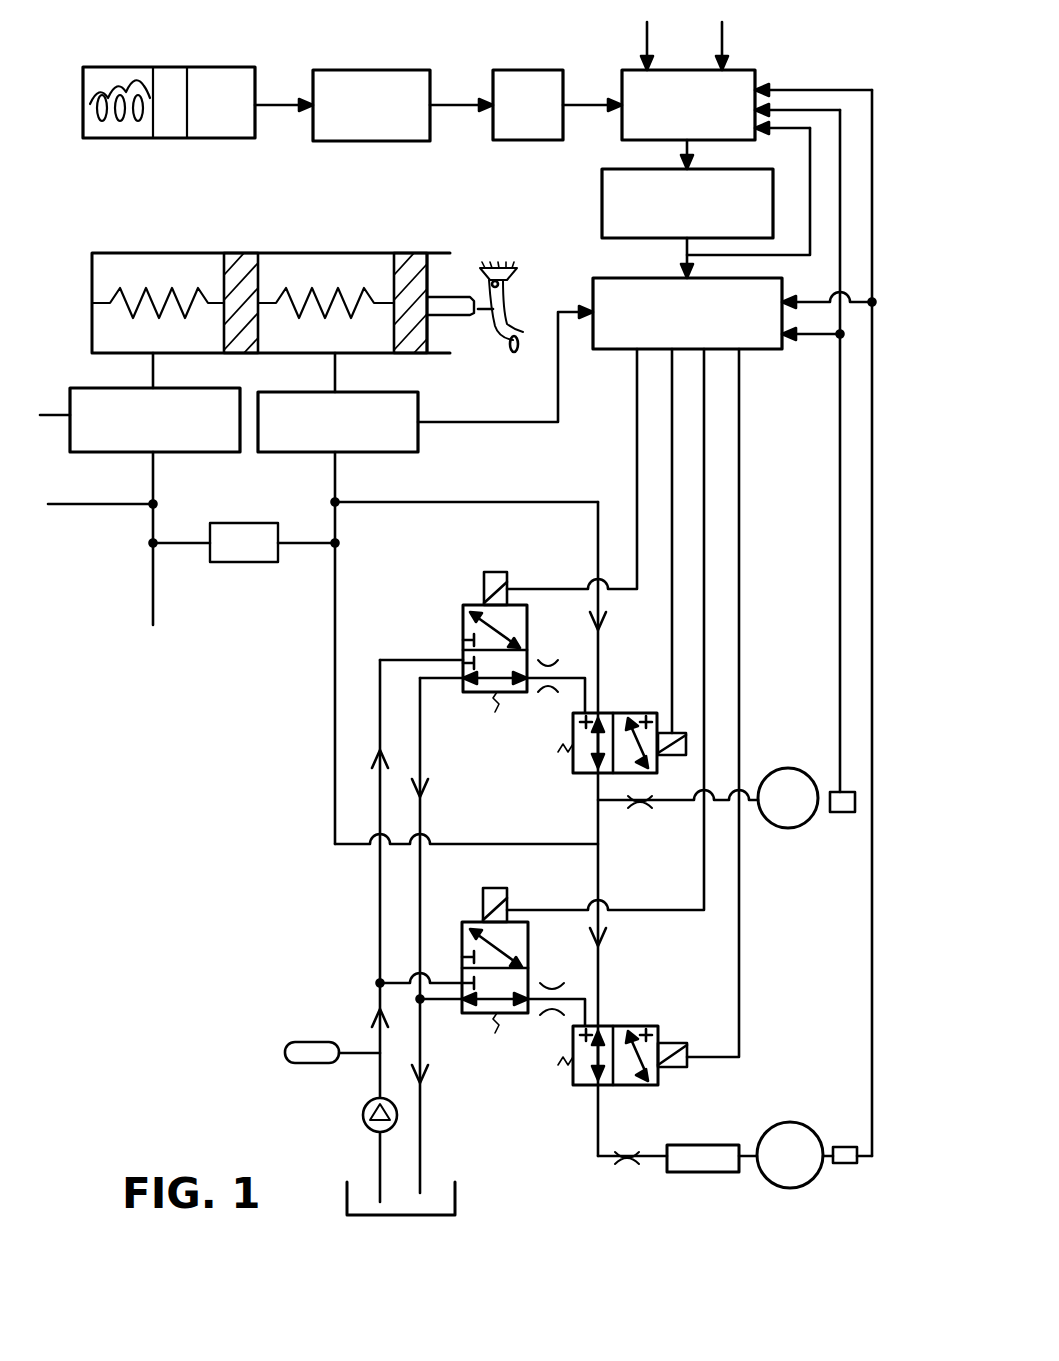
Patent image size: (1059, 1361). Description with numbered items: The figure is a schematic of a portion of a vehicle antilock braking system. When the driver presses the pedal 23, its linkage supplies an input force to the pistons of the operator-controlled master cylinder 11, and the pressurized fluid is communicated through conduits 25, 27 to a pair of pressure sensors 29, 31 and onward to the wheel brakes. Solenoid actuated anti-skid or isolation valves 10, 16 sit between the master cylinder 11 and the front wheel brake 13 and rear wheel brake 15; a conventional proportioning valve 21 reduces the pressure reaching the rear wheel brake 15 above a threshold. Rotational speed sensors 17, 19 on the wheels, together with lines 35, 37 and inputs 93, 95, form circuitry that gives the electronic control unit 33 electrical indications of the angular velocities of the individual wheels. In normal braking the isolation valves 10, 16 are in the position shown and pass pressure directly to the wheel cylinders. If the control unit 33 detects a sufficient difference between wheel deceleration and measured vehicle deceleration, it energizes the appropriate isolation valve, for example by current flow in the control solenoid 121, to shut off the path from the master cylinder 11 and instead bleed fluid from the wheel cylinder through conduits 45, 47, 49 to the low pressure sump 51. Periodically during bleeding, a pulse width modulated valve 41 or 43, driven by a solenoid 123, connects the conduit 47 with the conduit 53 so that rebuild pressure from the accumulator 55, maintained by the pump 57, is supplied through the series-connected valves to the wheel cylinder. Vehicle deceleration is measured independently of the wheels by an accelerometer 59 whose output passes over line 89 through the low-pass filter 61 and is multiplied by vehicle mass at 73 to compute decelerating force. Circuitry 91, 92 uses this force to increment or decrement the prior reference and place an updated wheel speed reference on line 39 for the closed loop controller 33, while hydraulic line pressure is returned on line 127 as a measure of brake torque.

The anti-skid or isolation valve 10 is at (578, 770).
The master cylinder 11 is at (329, 253).
The front wheel brake 13 is at (782, 768).
The rear wheel brake 15 is at (790, 1122).
The anti-skid or isolation valve 16 is at (574, 1076).
The rotational speed sensor 17 is at (838, 812).
The rotational speed sensor 19 is at (845, 1163).
The proportioning valve 21 is at (705, 1145).
The brake pedal and linkage 23 is at (456, 297).
The conduit (brake line) 25 is at (153, 370).
The conduit (brake line) 27 is at (335, 372).
The pressure sensor 29 is at (76, 390).
The pressure sensor 31 is at (408, 448).
The electronic control unit 33 is at (768, 345).
The wheel speed circuitry line 35 is at (840, 573).
The wheel speed circuitry line 37 is at (872, 956).
The wheel speed reference line 39 is at (680, 256).
The pulse width modulated solenoid actuated valve 41 is at (474, 608).
The pulse width modulated solenoid actuated valve 43 is at (470, 1015).
The conduit 45 is at (613, 800).
The conduit 47 is at (546, 660).
The conduit 49 is at (420, 730).
The sump 51 is at (455, 1194).
The conduit 53 is at (380, 897).
The accumulator 55 is at (286, 1046).
The pump 57 is at (364, 1116).
The accelerometer 59 is at (165, 138).
The low-pass filter 61 is at (322, 78).
The multiplier 73 is at (509, 78).
The accelerometer signal line 89 is at (272, 105).
The wheel speed reference circuitry 91 is at (622, 143).
The increment or decrement circuitry 92 is at (602, 208).
The wheel speed circuitry input 93 is at (646, 36).
The wheel speed circuitry input 95 is at (722, 38).
The control solenoid 121 is at (670, 755).
The solenoid 123 is at (497, 572).
The hydraulic line pressure line 127 is at (520, 424).